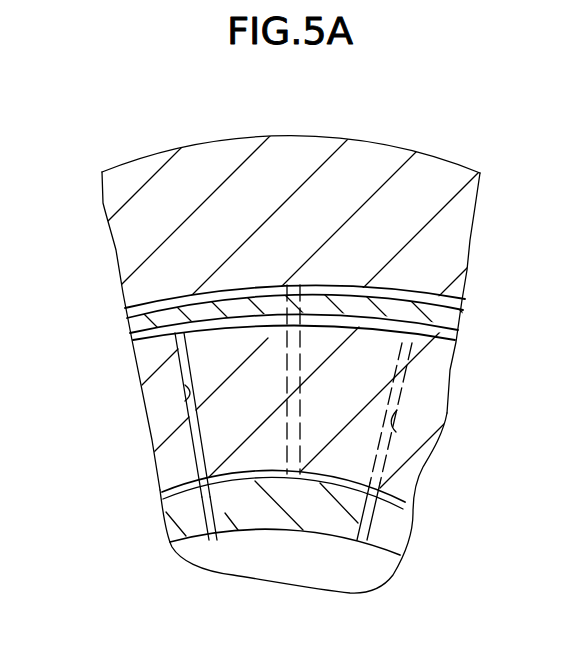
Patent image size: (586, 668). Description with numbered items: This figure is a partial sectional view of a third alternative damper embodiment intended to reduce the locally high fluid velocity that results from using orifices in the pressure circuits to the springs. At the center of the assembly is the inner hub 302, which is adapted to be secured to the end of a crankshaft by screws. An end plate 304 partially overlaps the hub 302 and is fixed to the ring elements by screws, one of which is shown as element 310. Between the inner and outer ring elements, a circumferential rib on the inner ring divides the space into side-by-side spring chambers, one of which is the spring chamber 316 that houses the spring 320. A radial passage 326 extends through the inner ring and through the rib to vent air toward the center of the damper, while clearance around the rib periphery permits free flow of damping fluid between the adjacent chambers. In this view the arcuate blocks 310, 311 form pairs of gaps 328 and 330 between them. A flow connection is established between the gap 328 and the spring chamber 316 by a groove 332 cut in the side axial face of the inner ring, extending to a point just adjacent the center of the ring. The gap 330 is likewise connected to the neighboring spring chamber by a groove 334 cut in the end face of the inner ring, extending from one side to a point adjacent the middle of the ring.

The inner hub 302 is at (370, 566).
The end plate 304 is at (374, 170).
The arcuate block 310 is at (173, 510).
The arcuate block 311 is at (298, 540).
The spring chamber 316 is at (130, 311).
The spring 320 is at (447, 334).
The radial passage 326 is at (304, 437).
The gap 328 is at (222, 540).
The gap 330 is at (352, 560).
The groove 332 is at (186, 416).
The groove 334 is at (393, 432).